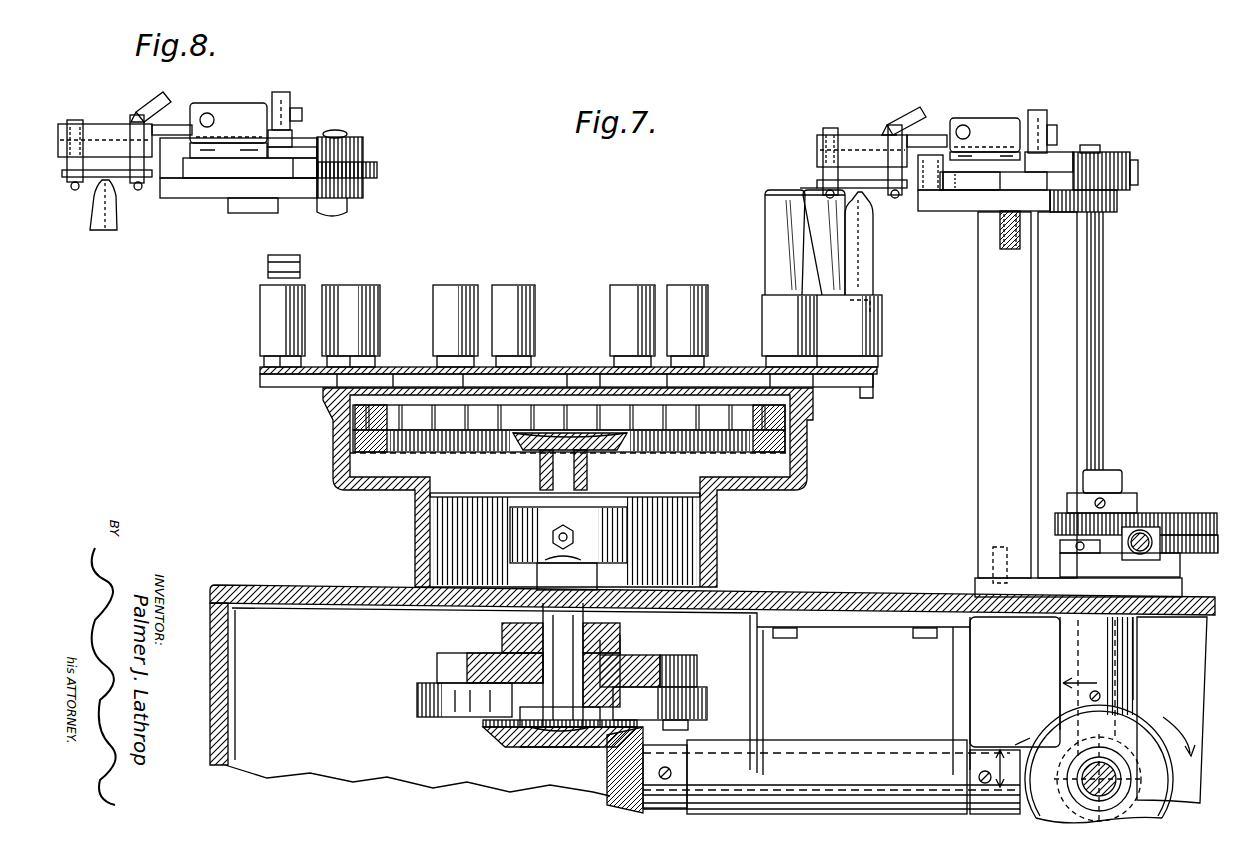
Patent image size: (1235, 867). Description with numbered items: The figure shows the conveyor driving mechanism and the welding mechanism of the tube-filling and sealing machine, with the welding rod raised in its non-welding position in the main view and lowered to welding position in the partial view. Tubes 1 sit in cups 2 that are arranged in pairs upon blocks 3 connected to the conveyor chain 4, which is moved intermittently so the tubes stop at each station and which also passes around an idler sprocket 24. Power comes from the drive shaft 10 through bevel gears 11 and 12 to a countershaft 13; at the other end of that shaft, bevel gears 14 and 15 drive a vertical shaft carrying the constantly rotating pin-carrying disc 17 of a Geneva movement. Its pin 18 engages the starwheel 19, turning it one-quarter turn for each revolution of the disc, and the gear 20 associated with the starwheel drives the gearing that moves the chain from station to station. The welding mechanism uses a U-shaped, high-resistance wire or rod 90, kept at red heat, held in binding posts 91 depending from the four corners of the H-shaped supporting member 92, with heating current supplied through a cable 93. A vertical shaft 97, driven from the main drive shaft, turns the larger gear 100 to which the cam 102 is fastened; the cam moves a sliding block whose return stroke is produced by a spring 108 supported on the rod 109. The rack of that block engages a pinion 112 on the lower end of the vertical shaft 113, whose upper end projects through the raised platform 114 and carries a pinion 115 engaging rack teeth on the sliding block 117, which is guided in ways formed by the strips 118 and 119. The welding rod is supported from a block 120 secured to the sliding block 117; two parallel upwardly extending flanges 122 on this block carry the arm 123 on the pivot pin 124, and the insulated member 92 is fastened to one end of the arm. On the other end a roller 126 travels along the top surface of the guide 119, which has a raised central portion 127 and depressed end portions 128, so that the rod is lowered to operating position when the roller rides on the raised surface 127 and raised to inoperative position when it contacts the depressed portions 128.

In FIG. 8, the tube 1 is at (104, 218).
In FIG. 7, the tube 1 is at (300, 268).
In FIG. 7, the cup 2 is at (433, 321).
In FIG. 7, the block 3 is at (292, 386).
In FIG. 7, the conveyor chain 4 is at (340, 450).
In FIG. 7, the drive shaft 10 is at (1108, 772).
In FIG. 7, the bevel gear 11 is at (1047, 712).
In FIG. 7, the bevel gear 12 is at (1017, 748).
In FIG. 7, the countershaft 13 is at (833, 742).
In FIG. 7, the bevel gear 14 is at (607, 797).
In FIG. 7, the bevel gear 15 is at (548, 748).
In FIG. 7, the pin-carrying disc 17 is at (417, 701).
In FIG. 7, the pin 18 is at (697, 668).
In FIG. 7, the starwheel 19 is at (437, 664).
In FIG. 7, the gear 20 is at (502, 636).
In FIG. 7, the idler sprocket 24 is at (433, 432).
In FIG. 8, the welding rod 90 is at (92, 183).
In FIG. 7, the welding rod 90 is at (882, 197).
In FIG. 8, the binding post 91 is at (107, 173).
In FIG. 7, the binding post 91 is at (853, 182).
In FIG. 8, the H-shaped supporting member 92 is at (75, 151).
In FIG. 7, the H-shaped supporting member 92 is at (818, 158).
In FIG. 8, the cable 93 is at (142, 112).
In FIG. 7, the cable 93 is at (912, 112).
In FIG. 7, the vertical shaft 97 is at (1113, 472).
In FIG. 7, the gear 100 is at (1193, 514).
In FIG. 7, the cam 102 is at (1205, 553).
In FIG. 7, the spring 108 is at (1145, 530).
In FIG. 7, the rod 109 is at (1120, 563).
In FIG. 7, the pinion 112 is at (1078, 588).
In FIG. 8, the vertical shaft 113 is at (340, 135).
In FIG. 7, the vertical shaft 113 is at (1092, 342).
In FIG. 8, the raised platform 114 is at (220, 193).
In FIG. 7, the raised platform 114 is at (973, 214).
In FIG. 8, the pinion 115 is at (378, 171).
In FIG. 7, the pinion 115 is at (1135, 181).
In FIG. 8, the sliding block 117 is at (200, 168).
In FIG. 7, the sliding block 117 is at (953, 193).
In FIG. 7, the strip 118 is at (927, 212).
In FIG. 7, the strip 119 is at (932, 157).
In FIG. 7, the block 120 is at (993, 181).
In FIG. 8, the flange 122 is at (228, 130).
In FIG. 7, the flange 122 is at (985, 139).
In FIG. 8, the arm 123 is at (108, 124).
In FIG. 7, the arm 123 is at (862, 134).
In FIG. 8, the pin 124 is at (210, 114).
In FIG. 7, the pin 124 is at (966, 126).
In FIG. 8, the roller 126 is at (283, 98).
In FIG. 7, the roller 126 is at (1040, 110).
In FIG. 8, the raised central portion 127 is at (272, 158).
In FIG. 8, the depressed end portion 128 is at (274, 164).